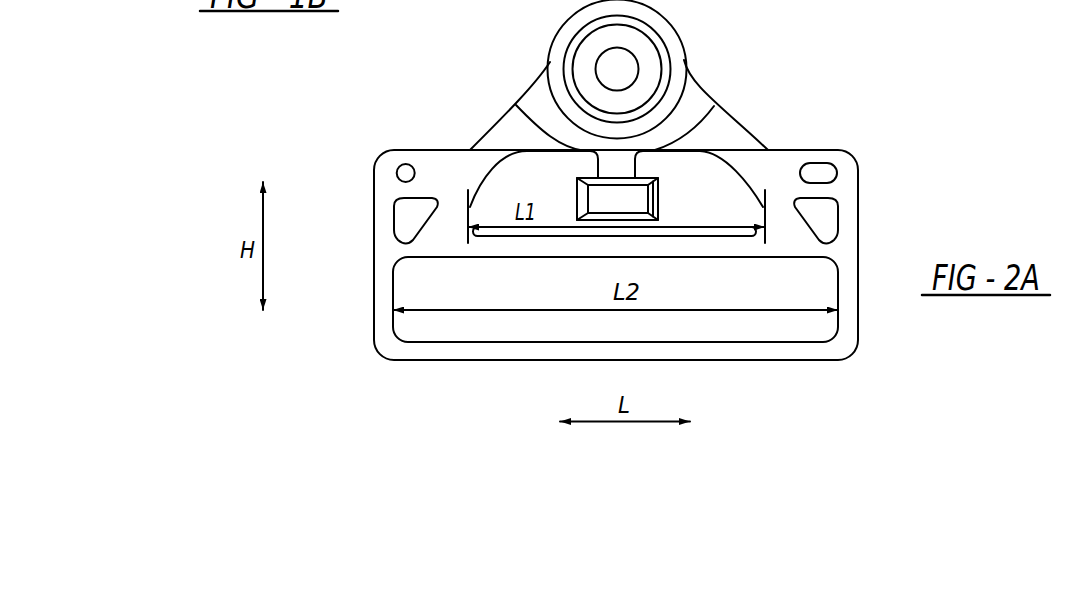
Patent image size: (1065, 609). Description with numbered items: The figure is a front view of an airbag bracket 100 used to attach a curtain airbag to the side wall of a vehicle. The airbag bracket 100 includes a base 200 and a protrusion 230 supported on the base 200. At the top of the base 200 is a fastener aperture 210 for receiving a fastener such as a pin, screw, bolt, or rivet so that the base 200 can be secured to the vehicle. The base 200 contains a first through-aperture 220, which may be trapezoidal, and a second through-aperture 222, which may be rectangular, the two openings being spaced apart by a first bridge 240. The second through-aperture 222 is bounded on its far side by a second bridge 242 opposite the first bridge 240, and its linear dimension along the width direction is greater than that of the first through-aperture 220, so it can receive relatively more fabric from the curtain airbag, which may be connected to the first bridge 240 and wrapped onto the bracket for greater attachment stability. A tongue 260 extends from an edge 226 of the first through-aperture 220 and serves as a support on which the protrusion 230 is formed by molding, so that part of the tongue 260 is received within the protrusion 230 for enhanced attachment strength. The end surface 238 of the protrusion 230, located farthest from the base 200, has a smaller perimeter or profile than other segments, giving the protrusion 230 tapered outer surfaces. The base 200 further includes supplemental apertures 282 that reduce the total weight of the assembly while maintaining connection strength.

The airbag bracket 100 is at (422, 375).
The base 200 is at (510, 127).
The fastener aperture 210 is at (622, 63).
The first through-aperture 220 is at (523, 180).
The second through-aperture 222 is at (423, 282).
The edge 226 is at (553, 153).
The protrusion 230 is at (666, 194).
The end surface 238 is at (602, 201).
The first bridge 240 is at (707, 246).
The second bridge 242 is at (749, 353).
The tongue 260 is at (624, 156).
The supplemental apertures 282 is at (820, 217).